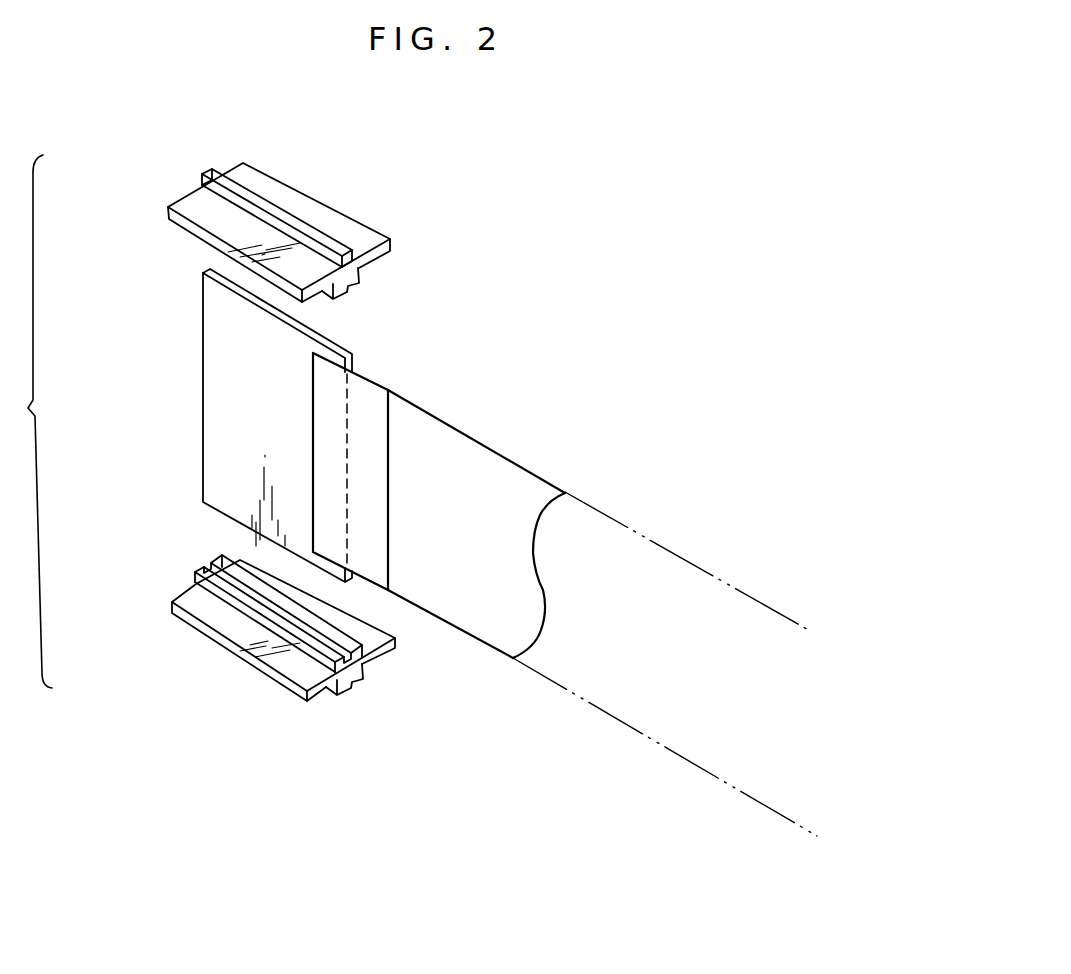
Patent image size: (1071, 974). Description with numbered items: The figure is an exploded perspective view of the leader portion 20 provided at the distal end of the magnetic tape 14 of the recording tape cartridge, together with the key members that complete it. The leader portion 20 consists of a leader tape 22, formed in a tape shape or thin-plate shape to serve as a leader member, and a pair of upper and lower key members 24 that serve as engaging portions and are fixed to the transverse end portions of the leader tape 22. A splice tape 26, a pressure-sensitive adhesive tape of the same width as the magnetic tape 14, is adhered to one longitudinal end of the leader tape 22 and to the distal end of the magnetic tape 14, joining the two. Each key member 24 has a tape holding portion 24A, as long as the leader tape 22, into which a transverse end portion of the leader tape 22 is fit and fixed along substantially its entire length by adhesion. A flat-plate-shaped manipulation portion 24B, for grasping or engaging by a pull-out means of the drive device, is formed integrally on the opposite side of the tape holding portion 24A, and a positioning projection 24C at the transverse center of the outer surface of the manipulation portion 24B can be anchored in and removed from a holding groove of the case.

The magnetic tape 14 is at (592, 520).
The leader portion 20 is at (109, 263).
The leader tape 22 is at (215, 368).
The key member 24 is at (186, 193).
The tape holding portion 24A is at (360, 279).
The manipulation portion 24B is at (350, 222).
The positioning projection 24C is at (287, 220).
The splice tape 26 is at (368, 400).